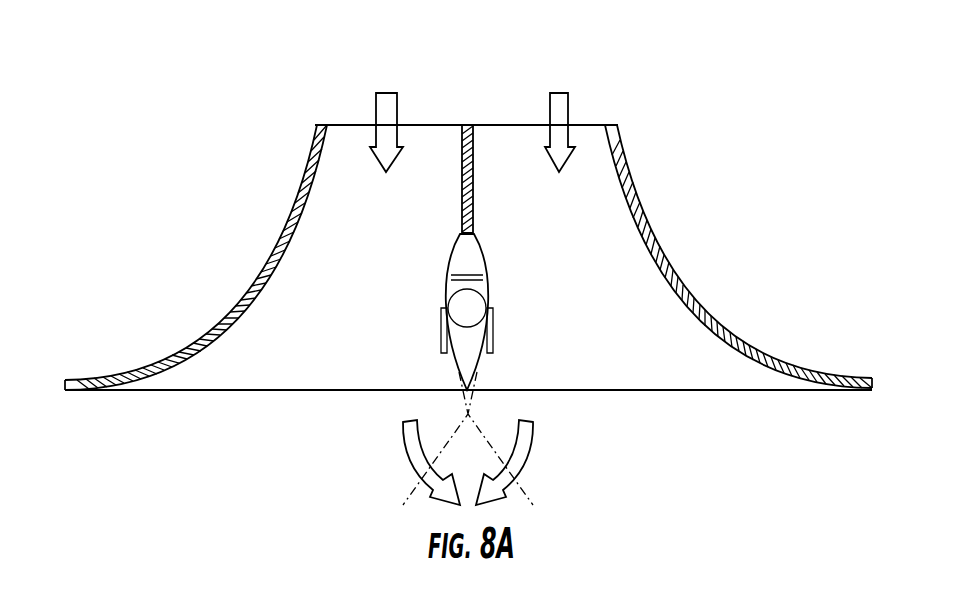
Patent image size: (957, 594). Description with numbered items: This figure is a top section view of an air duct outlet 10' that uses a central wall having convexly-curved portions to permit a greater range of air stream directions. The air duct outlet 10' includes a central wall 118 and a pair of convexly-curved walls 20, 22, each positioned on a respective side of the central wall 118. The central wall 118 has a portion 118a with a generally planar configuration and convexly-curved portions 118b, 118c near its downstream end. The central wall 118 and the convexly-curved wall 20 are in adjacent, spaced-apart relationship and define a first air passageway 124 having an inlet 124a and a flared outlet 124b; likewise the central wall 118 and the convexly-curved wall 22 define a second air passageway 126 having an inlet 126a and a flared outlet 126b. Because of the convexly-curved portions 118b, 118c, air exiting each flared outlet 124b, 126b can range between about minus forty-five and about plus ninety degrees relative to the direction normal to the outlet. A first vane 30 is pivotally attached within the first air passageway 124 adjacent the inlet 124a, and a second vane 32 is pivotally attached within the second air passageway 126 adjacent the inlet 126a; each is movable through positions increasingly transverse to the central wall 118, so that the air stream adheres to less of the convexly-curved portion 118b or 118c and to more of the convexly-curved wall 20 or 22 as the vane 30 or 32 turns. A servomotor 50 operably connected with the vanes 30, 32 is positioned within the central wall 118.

The air duct outlet 10' is at (661, 58).
The convexly-curved wall 20 is at (690, 300).
The convexly-curved wall 22 is at (262, 283).
The first vane 30 is at (493, 330).
The second vane 32 is at (441, 330).
The servomotor 50 is at (467, 308).
The central wall 118 is at (474, 157).
The planar portion of central wall 118a is at (464, 124).
The convexly-curved portion of central wall 118b is at (482, 360).
The convexly-curved portion of central wall 118c is at (452, 362).
The first air passageway 124 is at (707, 335).
The first air passageway inlet 124a is at (592, 125).
The flared outlet of first air passageway 124b is at (823, 391).
The second air passageway 126 is at (224, 340).
The second air passageway inlet 126a is at (337, 125).
The flared outlet of second air passageway 126b is at (127, 391).